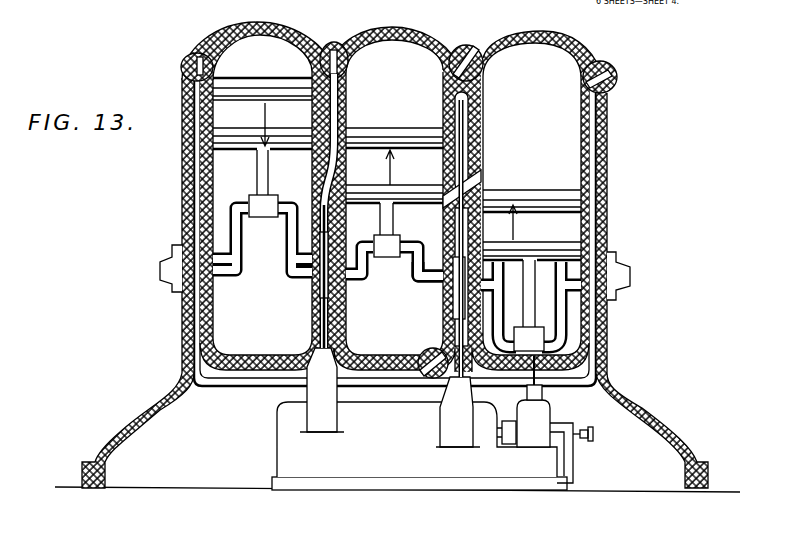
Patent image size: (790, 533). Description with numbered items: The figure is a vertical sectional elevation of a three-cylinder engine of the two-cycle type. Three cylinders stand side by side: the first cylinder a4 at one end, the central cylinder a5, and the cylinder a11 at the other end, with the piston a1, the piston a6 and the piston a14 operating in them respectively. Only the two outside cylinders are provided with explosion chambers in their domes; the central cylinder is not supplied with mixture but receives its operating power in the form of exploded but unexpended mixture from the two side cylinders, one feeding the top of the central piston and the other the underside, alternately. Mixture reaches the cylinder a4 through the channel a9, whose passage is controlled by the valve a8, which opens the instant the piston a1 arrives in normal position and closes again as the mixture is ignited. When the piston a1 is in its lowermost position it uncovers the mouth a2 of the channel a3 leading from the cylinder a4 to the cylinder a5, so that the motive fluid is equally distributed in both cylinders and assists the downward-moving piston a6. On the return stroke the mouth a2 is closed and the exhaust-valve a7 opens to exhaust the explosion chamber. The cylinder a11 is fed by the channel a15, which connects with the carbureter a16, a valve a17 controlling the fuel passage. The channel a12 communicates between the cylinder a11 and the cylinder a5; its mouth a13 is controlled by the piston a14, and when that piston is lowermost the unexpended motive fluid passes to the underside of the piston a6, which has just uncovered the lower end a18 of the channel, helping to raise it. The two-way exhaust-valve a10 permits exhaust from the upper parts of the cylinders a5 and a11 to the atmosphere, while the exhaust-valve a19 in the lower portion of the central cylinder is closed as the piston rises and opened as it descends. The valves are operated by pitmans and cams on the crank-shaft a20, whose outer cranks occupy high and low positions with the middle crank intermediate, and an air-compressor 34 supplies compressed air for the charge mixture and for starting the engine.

The piston a1 is at (262, 113).
The mouth a2 is at (314, 195).
The channel a3 is at (322, 160).
The cylinder a4 is at (225, 37).
The cylinder a5 is at (382, 37).
The piston a6 is at (394, 165).
The exhaust-valve a7 is at (319, 70).
The valve a8 is at (182, 79).
The channel a9 is at (196, 157).
The two-way exhaust-valve a10 is at (470, 58).
The cylinder a11 is at (574, 50).
The channel a12 is at (484, 176).
The mouth a13 is at (484, 181).
The piston a14 is at (532, 225).
The channel a15 is at (596, 148).
The carbureter a16 is at (538, 416).
The valve a17 is at (613, 92).
The lower end a18 is at (443, 208).
The exhaust-valve a19 is at (426, 382).
The crank-shaft a20 is at (160, 275).
The air-compressor 34 is at (419, 446).